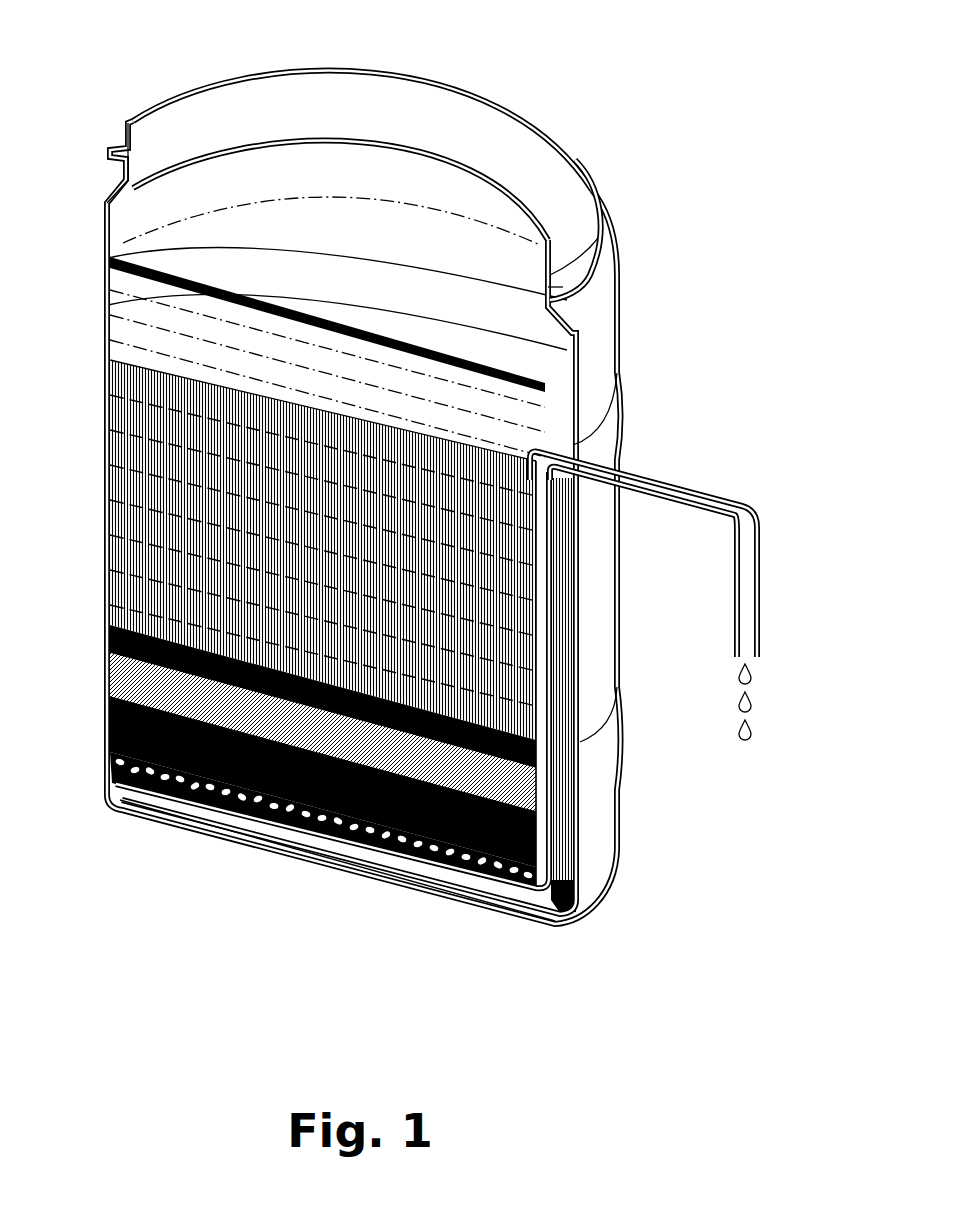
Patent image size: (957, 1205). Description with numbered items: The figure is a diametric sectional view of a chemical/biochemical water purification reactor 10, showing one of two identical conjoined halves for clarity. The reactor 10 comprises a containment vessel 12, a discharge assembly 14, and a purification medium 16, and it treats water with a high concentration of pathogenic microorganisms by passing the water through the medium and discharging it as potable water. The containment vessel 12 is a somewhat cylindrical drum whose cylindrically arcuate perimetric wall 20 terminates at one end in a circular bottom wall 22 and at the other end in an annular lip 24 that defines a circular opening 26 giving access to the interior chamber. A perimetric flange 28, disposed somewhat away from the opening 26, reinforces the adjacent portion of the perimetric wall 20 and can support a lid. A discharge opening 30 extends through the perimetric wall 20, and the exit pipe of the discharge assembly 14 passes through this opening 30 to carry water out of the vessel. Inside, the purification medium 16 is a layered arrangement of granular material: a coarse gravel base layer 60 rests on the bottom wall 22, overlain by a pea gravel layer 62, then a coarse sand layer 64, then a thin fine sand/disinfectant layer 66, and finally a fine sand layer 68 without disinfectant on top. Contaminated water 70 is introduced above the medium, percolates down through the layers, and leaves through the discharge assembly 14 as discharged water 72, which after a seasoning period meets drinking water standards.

The chemical/biochemical water purification reactor 10 is at (696, 241).
The containment vessel 12 is at (624, 339).
The discharge assembly 14 is at (724, 488).
The purification medium 16 is at (121, 578).
The perimetric wall 20 is at (598, 603).
The bottom wall 22 is at (433, 893).
The annular lip 24 is at (493, 130).
The circular opening 26 is at (152, 120).
The perimetric flange 28 is at (601, 213).
The discharge opening 30 is at (600, 465).
The coarse gravel base layer 60 is at (113, 764).
The pea gravel layer 62 is at (112, 723).
The coarse sand layer 64 is at (110, 680).
The fine sand/disinfectant layer 66 is at (112, 638).
The fine sand layer 68 is at (125, 456).
The contaminated water 70 is at (122, 328).
The discharged water 72 is at (756, 690).